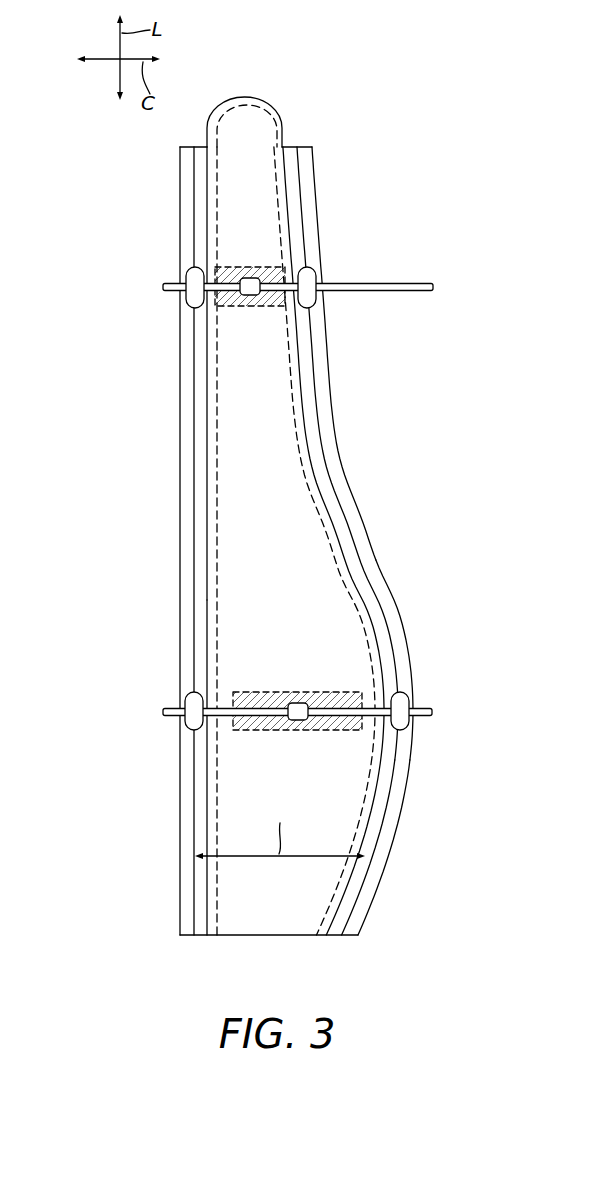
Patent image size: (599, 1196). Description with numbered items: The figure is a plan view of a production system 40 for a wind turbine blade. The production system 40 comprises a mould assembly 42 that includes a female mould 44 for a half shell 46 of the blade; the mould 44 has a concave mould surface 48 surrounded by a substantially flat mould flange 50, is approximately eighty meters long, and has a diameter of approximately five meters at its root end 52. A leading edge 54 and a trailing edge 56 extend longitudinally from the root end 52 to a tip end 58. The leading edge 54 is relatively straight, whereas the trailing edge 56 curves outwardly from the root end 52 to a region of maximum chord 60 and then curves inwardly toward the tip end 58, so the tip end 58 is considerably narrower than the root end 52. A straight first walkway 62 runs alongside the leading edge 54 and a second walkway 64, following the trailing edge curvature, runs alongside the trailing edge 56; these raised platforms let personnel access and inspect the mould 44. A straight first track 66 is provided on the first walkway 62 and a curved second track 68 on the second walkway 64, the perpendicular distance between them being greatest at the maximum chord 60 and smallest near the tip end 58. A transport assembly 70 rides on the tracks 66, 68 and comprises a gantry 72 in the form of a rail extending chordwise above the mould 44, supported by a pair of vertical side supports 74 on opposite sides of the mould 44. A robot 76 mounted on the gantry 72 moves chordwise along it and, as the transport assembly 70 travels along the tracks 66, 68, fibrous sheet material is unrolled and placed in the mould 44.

The production system 40 is at (396, 180).
The mould assembly 42 is at (204, 562).
The female mould 44 is at (322, 476).
The half shell 46 is at (278, 382).
The concave mould surface 48 is at (232, 399).
The mould flange 50 is at (333, 522).
The root end 52 is at (273, 936).
The leading edge 54 is at (207, 645).
The trailing edge 56 is at (353, 571).
The tip end 58 is at (243, 97).
The maximum chord 60 is at (396, 690).
The first walkway 62 is at (183, 903).
The second walkway 64 is at (365, 886).
The first track 66 is at (194, 800).
The second track 68 is at (393, 794).
The transport assembly 70 is at (364, 262).
The gantry 72 is at (400, 292).
The vertical side supports 74 is at (193, 266).
The robot 76 is at (334, 690).